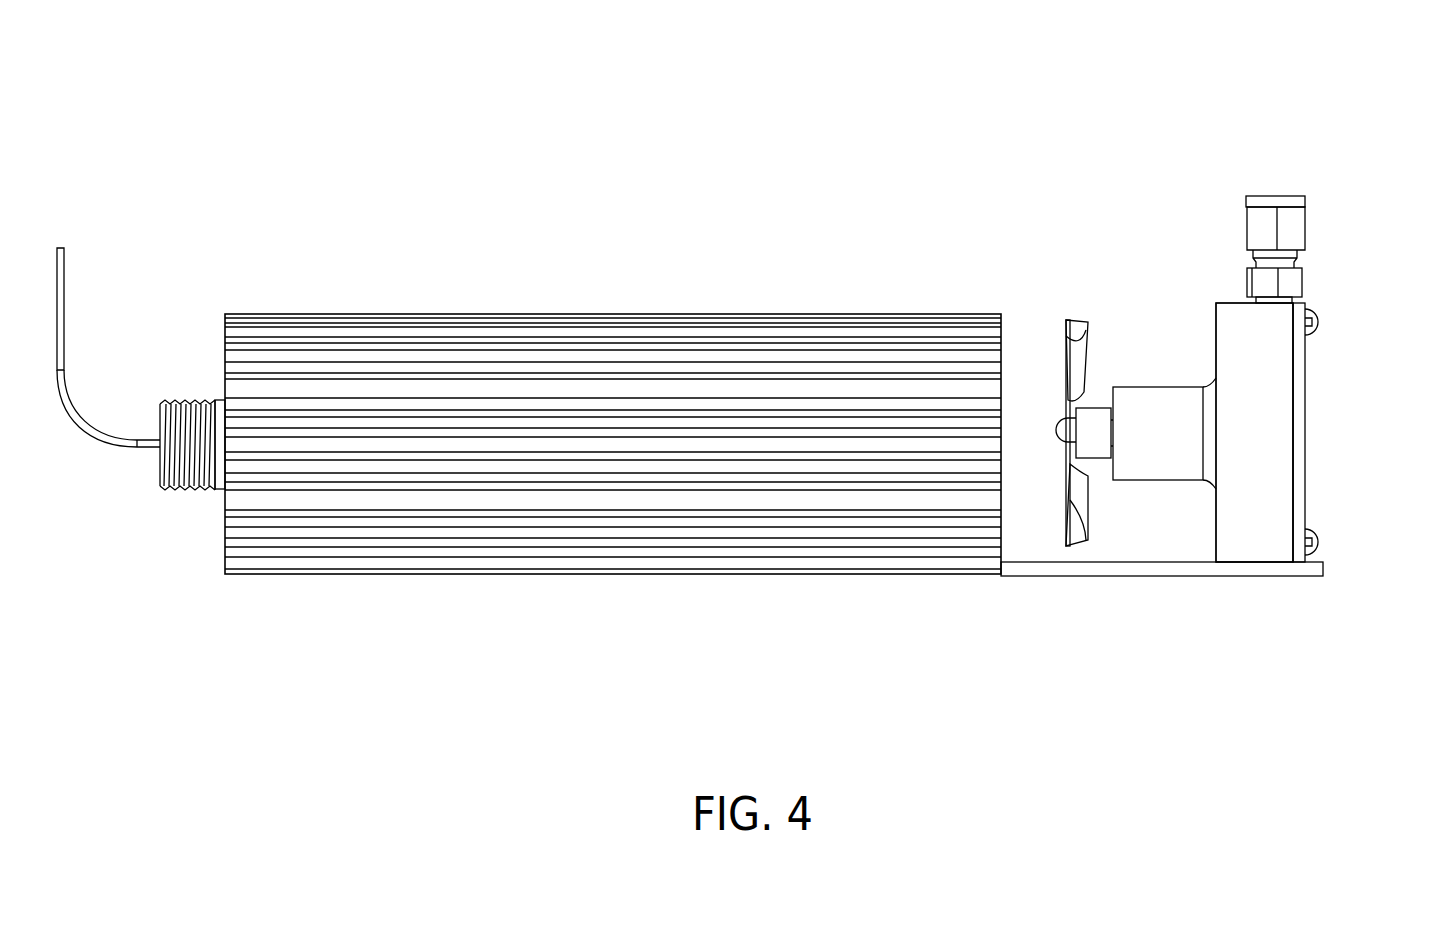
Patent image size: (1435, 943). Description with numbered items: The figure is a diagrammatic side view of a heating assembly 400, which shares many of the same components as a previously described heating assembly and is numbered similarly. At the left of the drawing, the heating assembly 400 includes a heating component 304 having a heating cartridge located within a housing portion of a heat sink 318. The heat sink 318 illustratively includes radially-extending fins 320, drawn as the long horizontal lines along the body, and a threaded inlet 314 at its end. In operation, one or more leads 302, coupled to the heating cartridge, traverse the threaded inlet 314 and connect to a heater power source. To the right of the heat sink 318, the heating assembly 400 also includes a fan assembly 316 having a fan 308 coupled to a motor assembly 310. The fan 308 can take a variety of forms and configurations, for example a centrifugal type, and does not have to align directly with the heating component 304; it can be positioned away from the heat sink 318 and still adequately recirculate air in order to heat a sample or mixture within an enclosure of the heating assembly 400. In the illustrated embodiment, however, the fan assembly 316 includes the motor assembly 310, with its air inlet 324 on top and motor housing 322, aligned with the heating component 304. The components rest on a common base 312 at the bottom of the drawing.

The heating assembly 400 is at (328, 150).
The leads 302 is at (58, 248).
The heating component 304 is at (668, 292).
The fan 308 is at (1077, 318).
The motor assembly 310 is at (1266, 362).
The base plate 312 is at (1138, 566).
The threaded inlet 314 is at (200, 490).
The fan assembly 316 is at (1152, 303).
The heat sink 318 is at (455, 510).
The radially-extending fins 320 is at (316, 500).
The motor housing 322 is at (1270, 442).
The air inlet 324 is at (1293, 230).